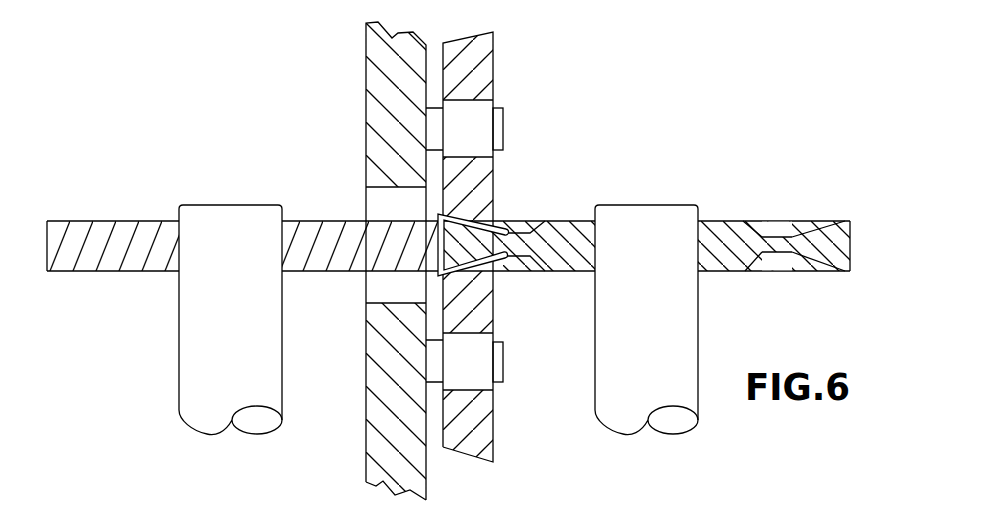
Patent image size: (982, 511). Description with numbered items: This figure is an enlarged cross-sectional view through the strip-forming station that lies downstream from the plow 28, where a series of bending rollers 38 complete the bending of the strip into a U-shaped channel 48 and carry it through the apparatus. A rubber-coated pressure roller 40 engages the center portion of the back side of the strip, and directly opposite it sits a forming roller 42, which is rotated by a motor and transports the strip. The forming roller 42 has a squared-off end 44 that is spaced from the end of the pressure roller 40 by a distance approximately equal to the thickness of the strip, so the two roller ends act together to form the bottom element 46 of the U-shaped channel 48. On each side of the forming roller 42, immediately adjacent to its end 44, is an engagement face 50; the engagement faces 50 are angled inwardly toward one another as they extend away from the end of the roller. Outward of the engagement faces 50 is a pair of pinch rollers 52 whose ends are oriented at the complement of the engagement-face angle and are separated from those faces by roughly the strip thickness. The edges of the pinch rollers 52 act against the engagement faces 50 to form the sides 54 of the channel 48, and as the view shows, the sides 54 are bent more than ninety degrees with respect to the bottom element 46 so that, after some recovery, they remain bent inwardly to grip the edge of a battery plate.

The plow 28 is at (378, 56).
The bending rollers 38 is at (560, 172).
The pressure roller 40 is at (125, 232).
The forming roller 42 is at (722, 232).
The squared-off end 44 is at (852, 240).
The bottom element 46 is at (437, 244).
The U-shaped channel 48 is at (485, 217).
The engagement face 50 is at (812, 232).
The pinch rollers 52 is at (485, 55).
The sides 54 is at (472, 215).